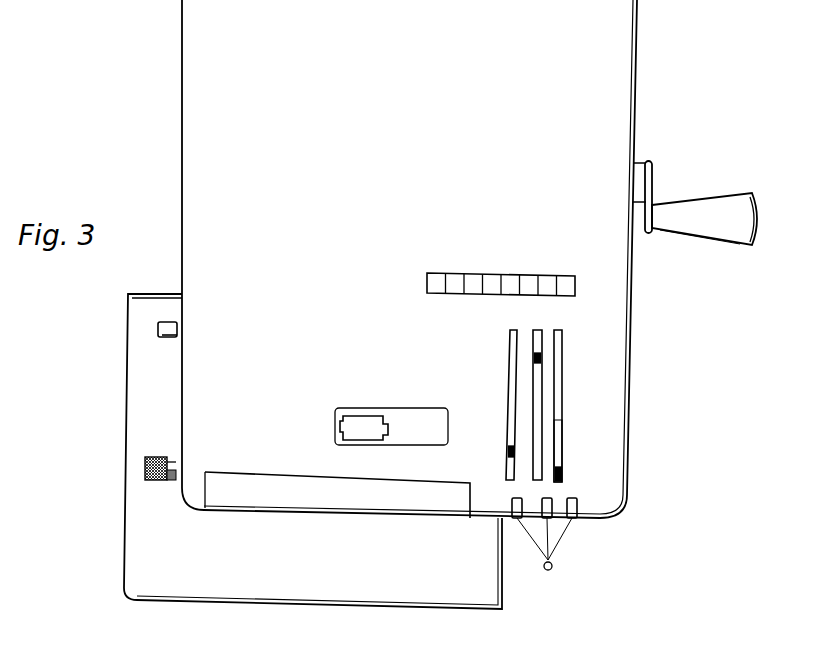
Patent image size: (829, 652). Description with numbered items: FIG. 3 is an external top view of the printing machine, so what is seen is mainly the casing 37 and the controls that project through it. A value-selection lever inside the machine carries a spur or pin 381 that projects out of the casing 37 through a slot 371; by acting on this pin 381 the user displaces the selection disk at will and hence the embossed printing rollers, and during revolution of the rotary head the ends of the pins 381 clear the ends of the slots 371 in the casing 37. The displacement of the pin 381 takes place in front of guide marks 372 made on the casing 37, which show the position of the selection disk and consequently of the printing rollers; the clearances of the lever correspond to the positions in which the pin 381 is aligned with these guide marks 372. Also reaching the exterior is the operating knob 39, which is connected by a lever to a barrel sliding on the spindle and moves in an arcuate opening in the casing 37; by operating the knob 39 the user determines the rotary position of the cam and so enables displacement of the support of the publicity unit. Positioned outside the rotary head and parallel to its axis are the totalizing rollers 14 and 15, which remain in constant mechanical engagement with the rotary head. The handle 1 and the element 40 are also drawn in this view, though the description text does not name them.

The crank handle 1 is at (688, 213).
The totalizing rollers 14 is at (565, 276).
The totalizing roller 15 is at (490, 273).
The casing 37 is at (192, 47).
The slot 371 is at (558, 330).
The guide marks 372 is at (565, 439).
The spur 381 is at (509, 447).
The operating knob 39 is at (165, 322).
The switch knob 40 is at (209, 446).